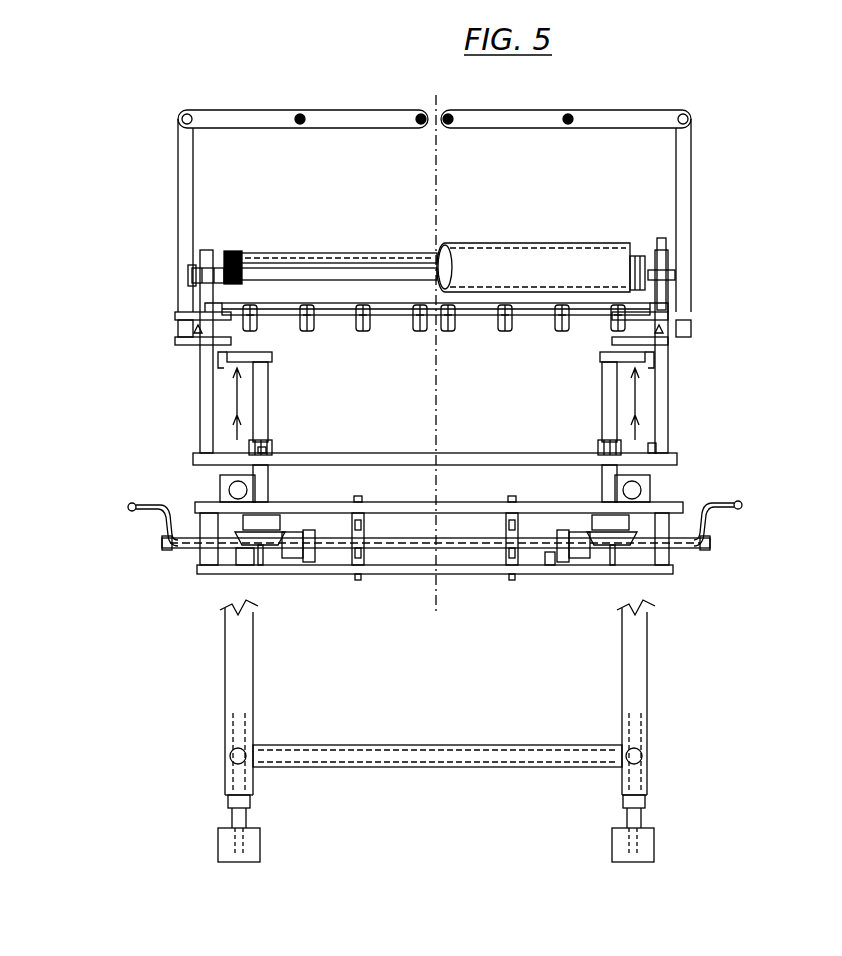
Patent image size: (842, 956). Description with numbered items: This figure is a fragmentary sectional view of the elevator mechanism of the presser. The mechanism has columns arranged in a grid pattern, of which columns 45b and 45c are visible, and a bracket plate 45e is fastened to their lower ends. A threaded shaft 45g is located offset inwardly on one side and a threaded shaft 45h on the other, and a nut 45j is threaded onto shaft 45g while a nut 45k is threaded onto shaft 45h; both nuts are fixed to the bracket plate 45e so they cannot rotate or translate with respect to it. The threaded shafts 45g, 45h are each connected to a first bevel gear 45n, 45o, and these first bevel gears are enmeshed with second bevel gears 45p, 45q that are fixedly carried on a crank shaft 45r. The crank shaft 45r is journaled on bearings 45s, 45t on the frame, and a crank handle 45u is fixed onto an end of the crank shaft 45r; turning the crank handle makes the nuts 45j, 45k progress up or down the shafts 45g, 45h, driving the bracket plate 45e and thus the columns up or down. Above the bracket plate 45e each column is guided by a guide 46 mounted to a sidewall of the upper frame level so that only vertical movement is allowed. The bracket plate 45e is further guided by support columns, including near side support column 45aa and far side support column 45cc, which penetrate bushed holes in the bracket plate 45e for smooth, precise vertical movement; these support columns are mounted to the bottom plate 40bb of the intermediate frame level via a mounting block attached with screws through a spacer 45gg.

The guide 46 is at (200, 316).
The column 45b is at (203, 395).
The column 45c is at (668, 390).
The bracket plate 45e is at (195, 455).
The threaded shaft 45g is at (268, 385).
The threaded shaft 45h is at (600, 385).
The nut 45j is at (272, 445).
The nut 45k is at (597, 445).
The spacer 45gg is at (262, 345).
The support column 45cc is at (583, 358).
The first bevel gear 45n is at (245, 522).
The first bevel gear 45o is at (632, 573).
The support column 45aa is at (258, 548).
The bottom plate 40bb is at (250, 565).
The second bevel gear 45p is at (290, 560).
The second bevel gear 45q is at (585, 560).
The crank shaft 45r is at (415, 545).
The bearing 45s is at (318, 565).
The bearing 45t is at (548, 565).
The crank handle 45u is at (148, 500).